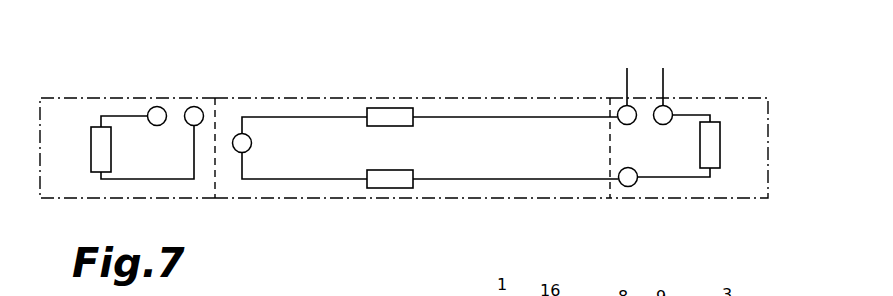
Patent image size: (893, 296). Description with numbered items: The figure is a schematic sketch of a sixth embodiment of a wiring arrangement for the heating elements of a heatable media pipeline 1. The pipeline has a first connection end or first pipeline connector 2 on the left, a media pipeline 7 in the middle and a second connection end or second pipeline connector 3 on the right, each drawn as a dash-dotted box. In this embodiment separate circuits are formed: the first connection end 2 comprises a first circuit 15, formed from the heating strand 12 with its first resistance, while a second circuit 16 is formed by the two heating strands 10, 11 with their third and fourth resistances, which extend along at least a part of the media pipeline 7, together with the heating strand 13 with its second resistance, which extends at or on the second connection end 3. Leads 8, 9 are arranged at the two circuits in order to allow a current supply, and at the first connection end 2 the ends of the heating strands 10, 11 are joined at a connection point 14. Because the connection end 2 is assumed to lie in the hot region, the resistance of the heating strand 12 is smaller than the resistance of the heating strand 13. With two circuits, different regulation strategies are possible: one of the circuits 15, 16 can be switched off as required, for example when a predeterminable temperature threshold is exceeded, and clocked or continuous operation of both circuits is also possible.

The heatable media pipeline 1 is at (452, 71).
The first connection end 2 is at (70, 98).
The second connection end 3 is at (710, 96).
The media pipeline 7 is at (512, 96).
The lead 8 is at (157, 106).
The lead 9 is at (194, 106).
The heating strand 10 is at (320, 180).
The heating strand 11 is at (318, 117).
The heating strand 12 is at (137, 179).
The heating strand 13 is at (667, 182).
The connection point 14 is at (242, 133).
The first circuit 15 is at (131, 129).
The second circuit 16 is at (557, 134).